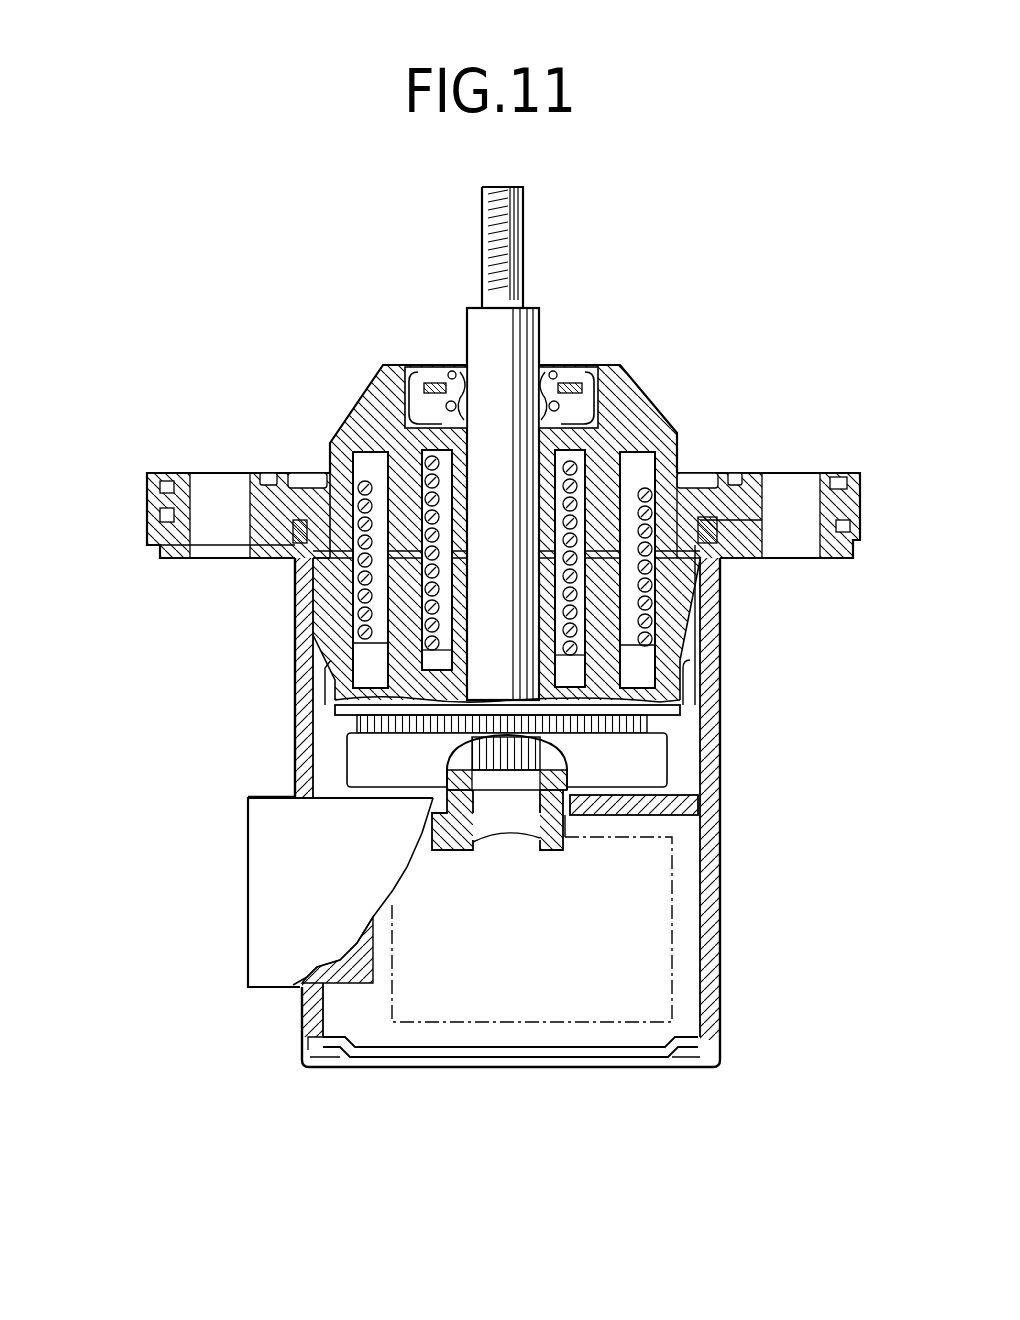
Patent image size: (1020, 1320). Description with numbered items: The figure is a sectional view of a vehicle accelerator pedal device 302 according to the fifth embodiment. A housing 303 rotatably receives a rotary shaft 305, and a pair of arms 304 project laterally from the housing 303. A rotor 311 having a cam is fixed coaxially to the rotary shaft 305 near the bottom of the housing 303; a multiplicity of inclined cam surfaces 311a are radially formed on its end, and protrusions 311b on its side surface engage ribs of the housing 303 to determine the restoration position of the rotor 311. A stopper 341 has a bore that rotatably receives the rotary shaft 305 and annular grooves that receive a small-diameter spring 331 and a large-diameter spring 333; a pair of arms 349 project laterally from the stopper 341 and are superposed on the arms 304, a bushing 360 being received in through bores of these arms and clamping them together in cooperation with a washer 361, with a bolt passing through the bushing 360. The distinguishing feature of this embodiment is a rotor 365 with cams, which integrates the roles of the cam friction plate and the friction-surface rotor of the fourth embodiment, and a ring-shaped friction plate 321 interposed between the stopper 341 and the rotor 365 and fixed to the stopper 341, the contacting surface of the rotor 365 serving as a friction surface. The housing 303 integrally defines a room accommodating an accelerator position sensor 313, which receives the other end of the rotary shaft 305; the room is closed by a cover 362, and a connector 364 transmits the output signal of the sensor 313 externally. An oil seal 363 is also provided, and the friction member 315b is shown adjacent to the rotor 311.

The accelerator pedal device 302 is at (786, 352).
The housing 303 is at (712, 1003).
The arms 304 is at (165, 533).
The rotary shaft 305 is at (517, 345).
The rotor 311 is at (647, 760).
The cam surfaces 311a is at (592, 707).
The protrusions 311b is at (680, 770).
The accelerator position sensor 313 is at (523, 1007).
The friction member 315b is at (425, 728).
The friction plate 321 is at (323, 543).
The small-diameter spring 331 is at (420, 428).
The large-diameter spring 333 is at (377, 470).
The stopper 341 is at (660, 437).
The arms 349 is at (162, 490).
The bushing 360 is at (266, 558).
The washer 361 is at (297, 515).
The cover 362 is at (683, 1067).
The oil seal 363 is at (585, 395).
The connector 364 is at (275, 938).
The rotor with cams 365 is at (680, 618).